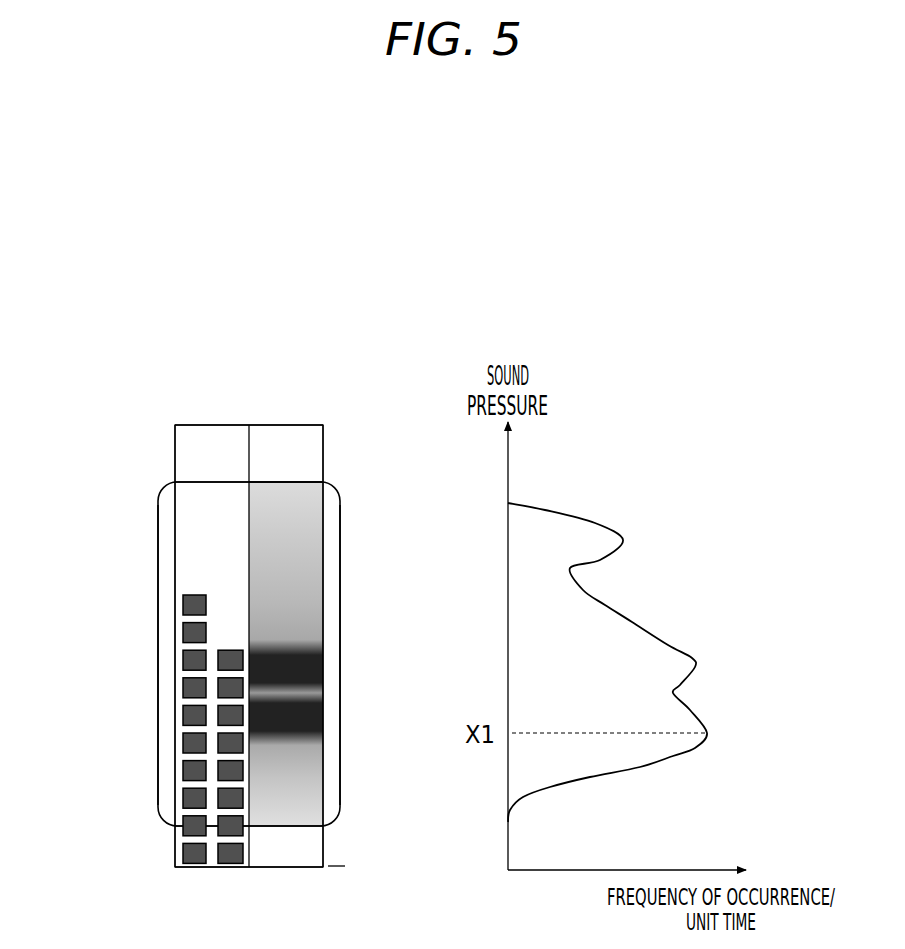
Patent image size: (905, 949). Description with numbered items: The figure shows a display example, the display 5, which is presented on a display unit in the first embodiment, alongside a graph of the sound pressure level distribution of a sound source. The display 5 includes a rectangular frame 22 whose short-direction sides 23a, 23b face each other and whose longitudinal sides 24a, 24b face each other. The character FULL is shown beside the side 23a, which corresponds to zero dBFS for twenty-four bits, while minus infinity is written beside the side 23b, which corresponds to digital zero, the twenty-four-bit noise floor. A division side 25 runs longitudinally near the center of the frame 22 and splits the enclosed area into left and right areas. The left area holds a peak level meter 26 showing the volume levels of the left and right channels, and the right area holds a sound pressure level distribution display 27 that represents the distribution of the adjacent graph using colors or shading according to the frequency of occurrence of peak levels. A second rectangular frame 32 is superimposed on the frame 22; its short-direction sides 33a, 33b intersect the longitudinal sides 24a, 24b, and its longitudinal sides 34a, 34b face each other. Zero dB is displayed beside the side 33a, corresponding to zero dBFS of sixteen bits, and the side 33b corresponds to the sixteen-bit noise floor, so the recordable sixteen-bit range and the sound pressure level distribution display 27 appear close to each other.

The display 5 is at (244, 258).
The frame 22 is at (176, 432).
The side 23a is at (228, 424).
The side 23b is at (300, 868).
The side 24a is at (176, 457).
The side 24b is at (323, 458).
The division side 25 is at (248, 541).
The peak level meter 26 is at (205, 582).
The sound pressure level distribution display 27 is at (300, 541).
The frame 32 is at (158, 679).
The side 33a is at (290, 483).
The side 33b is at (290, 826).
The side 34a is at (158, 632).
The side 34b is at (342, 614).